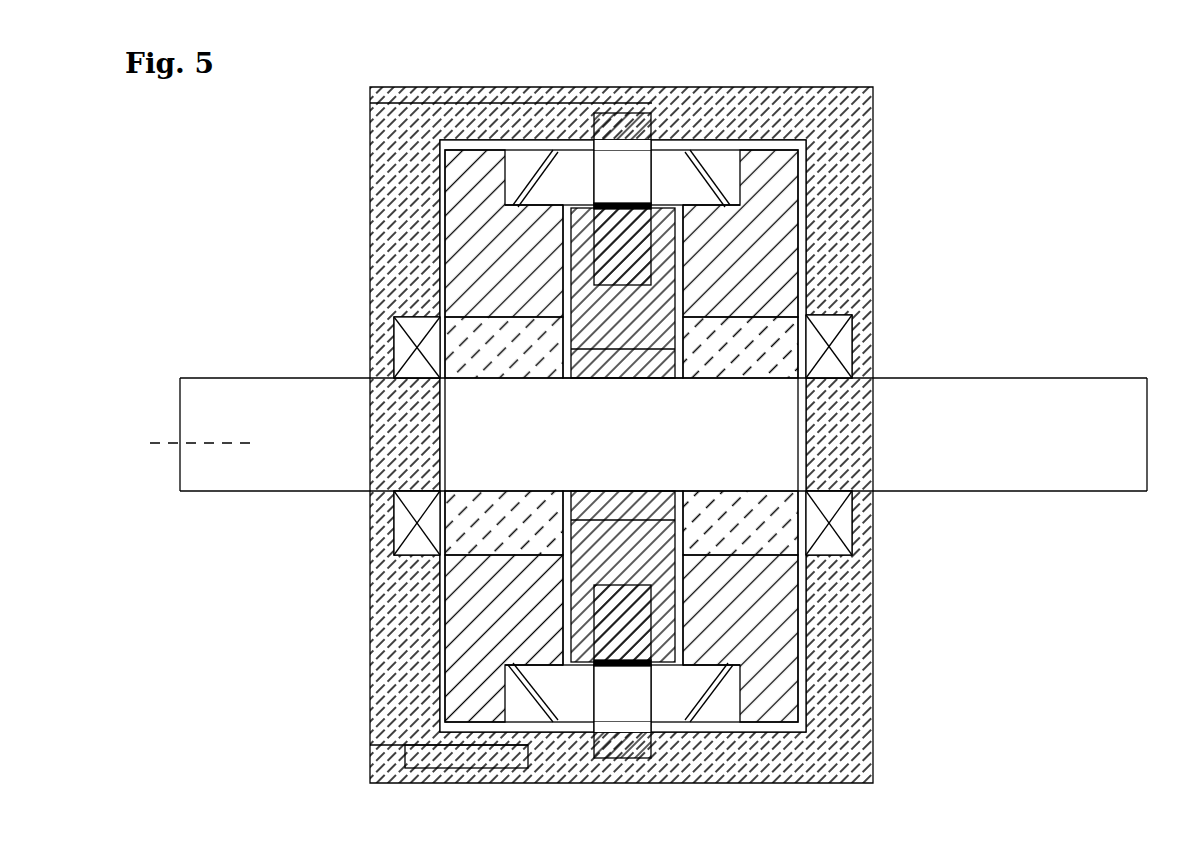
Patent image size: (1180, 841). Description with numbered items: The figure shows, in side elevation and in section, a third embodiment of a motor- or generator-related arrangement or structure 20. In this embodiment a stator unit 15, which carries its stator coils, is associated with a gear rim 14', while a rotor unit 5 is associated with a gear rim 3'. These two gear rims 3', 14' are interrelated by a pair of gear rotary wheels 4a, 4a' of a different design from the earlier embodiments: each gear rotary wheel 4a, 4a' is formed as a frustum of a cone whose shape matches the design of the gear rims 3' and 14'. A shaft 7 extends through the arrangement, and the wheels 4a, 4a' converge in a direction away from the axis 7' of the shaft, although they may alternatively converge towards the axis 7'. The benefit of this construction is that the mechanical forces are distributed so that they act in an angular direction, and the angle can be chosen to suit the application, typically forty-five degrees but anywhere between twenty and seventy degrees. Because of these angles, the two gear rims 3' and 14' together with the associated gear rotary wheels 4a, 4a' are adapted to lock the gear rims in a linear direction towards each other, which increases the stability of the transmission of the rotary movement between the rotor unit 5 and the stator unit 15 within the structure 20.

The arrangement or structure 20 is at (340, 168).
The gear rim 3' is at (621, 427).
The gear rotary wheel 4a is at (638, 153).
The gear rotary wheel 4a' is at (638, 709).
The gear rim 14' is at (639, 427).
The rotor unit 5 is at (507, 528).
The stator unit 15 is at (762, 345).
The shaft 7 is at (663, 399).
The axis 7' is at (157, 414).